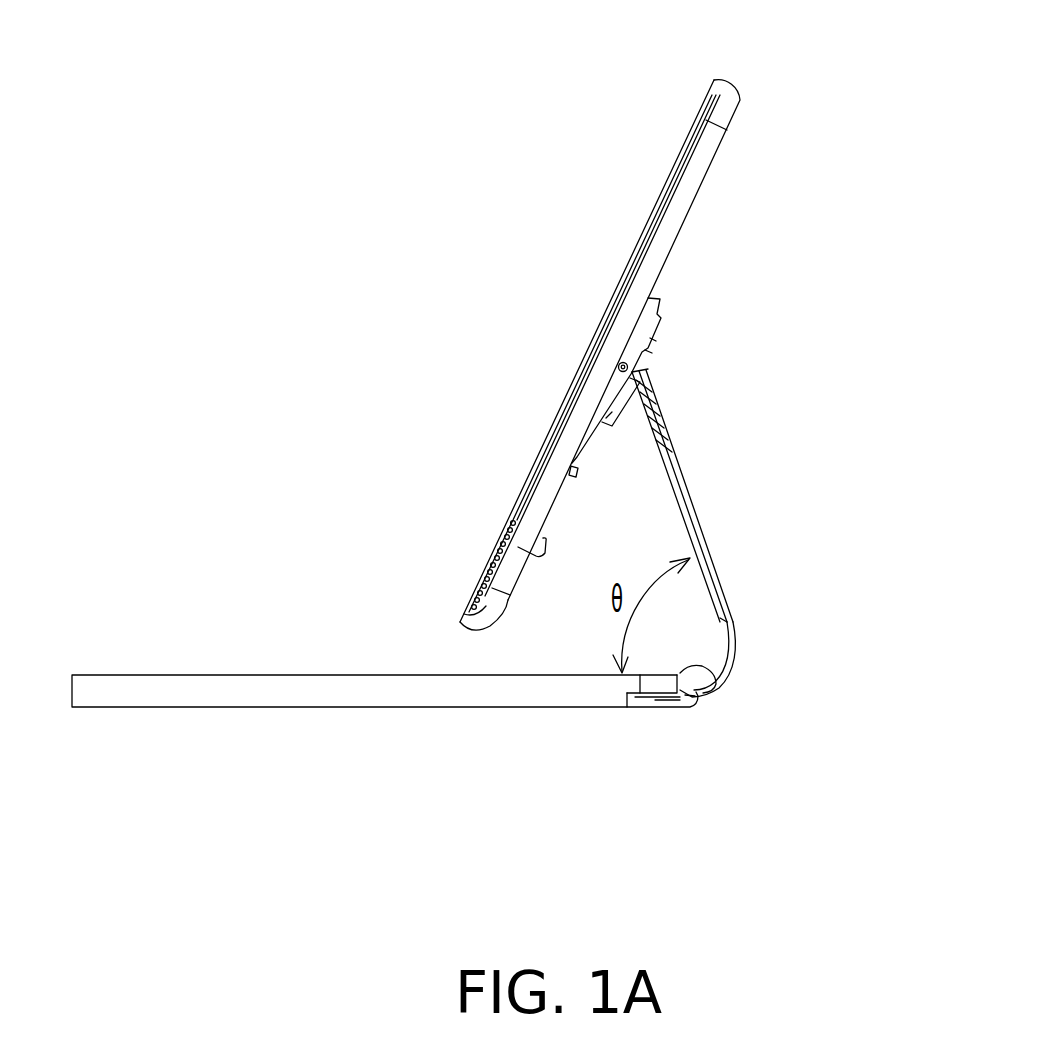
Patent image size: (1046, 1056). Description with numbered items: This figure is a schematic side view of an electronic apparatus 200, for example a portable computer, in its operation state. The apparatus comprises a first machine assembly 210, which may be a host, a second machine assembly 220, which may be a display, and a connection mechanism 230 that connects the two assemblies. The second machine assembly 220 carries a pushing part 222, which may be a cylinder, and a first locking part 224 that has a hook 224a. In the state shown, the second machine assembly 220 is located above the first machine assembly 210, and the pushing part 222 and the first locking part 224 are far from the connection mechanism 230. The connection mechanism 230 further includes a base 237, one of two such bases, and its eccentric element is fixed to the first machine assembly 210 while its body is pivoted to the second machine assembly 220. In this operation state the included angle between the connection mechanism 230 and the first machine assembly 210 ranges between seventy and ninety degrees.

The electronic apparatus 200 is at (913, 683).
The first machine assembly 210 is at (425, 700).
The second machine assembly 220 is at (727, 107).
The pushing part 222 is at (557, 470).
The first locking part 224 is at (548, 560).
The hook 224a is at (507, 525).
The connection mechanism 230 is at (703, 440).
The base 237 is at (658, 707).